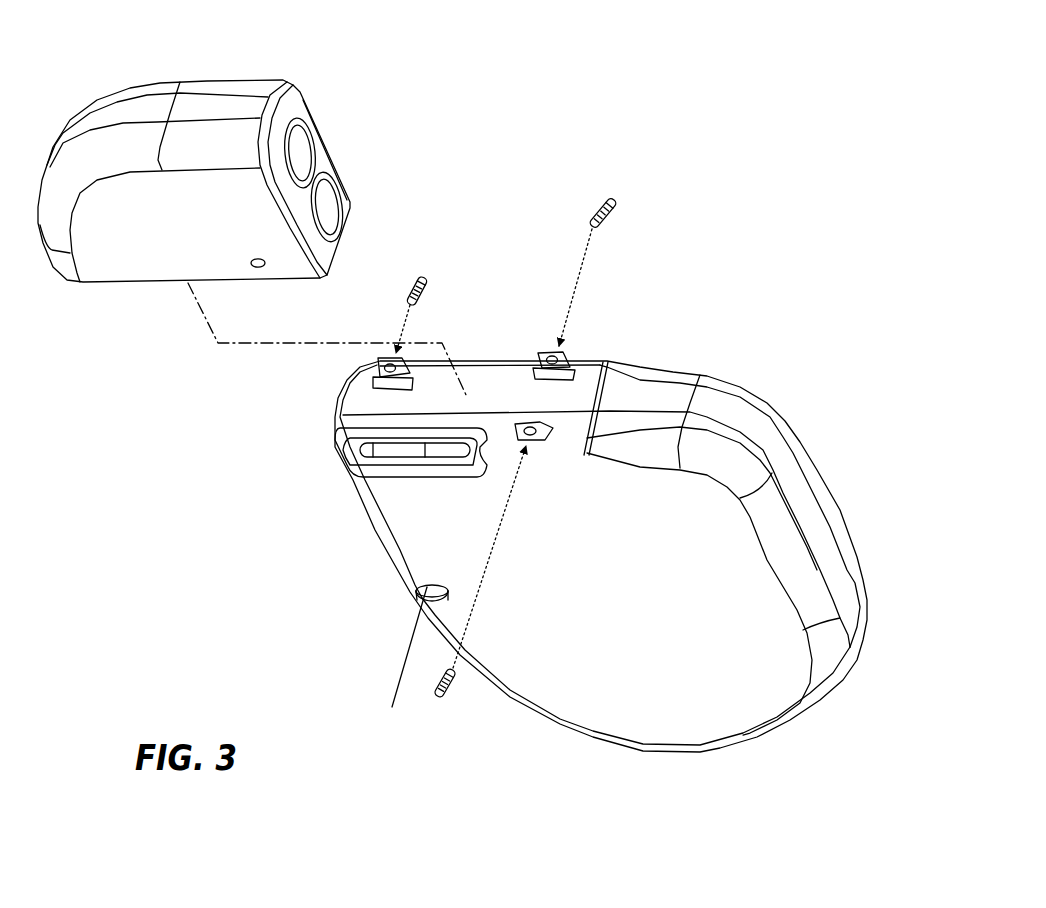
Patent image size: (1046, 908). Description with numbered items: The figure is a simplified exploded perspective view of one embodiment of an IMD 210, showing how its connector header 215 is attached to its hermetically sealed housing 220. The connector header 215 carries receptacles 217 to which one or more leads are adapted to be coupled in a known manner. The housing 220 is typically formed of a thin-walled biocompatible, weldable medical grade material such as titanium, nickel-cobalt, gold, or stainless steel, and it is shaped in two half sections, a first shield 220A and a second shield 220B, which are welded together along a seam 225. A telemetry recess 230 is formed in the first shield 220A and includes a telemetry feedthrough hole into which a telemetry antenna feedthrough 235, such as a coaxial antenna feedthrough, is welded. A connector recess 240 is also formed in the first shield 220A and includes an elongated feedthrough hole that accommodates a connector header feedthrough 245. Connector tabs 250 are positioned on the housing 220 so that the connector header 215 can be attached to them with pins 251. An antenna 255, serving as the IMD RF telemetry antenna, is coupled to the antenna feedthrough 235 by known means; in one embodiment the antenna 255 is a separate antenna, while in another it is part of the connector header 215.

The IMD 210 is at (706, 217).
The connector header 215 is at (193, 80).
The receptacles 217 is at (300, 152).
The hermetically sealed housing 220 is at (660, 650).
The first shield 220A is at (733, 722).
The second shield 220B is at (779, 414).
The seam 225 is at (795, 507).
The telemetry recess 230 is at (389, 571).
The telemetry antenna feedthrough 235 is at (410, 590).
The connector recess 240 is at (347, 458).
The connector header feedthrough 245 is at (363, 452).
The connector tabs 250 is at (402, 355).
The pins 251 is at (620, 193).
The antenna 255 is at (398, 680).